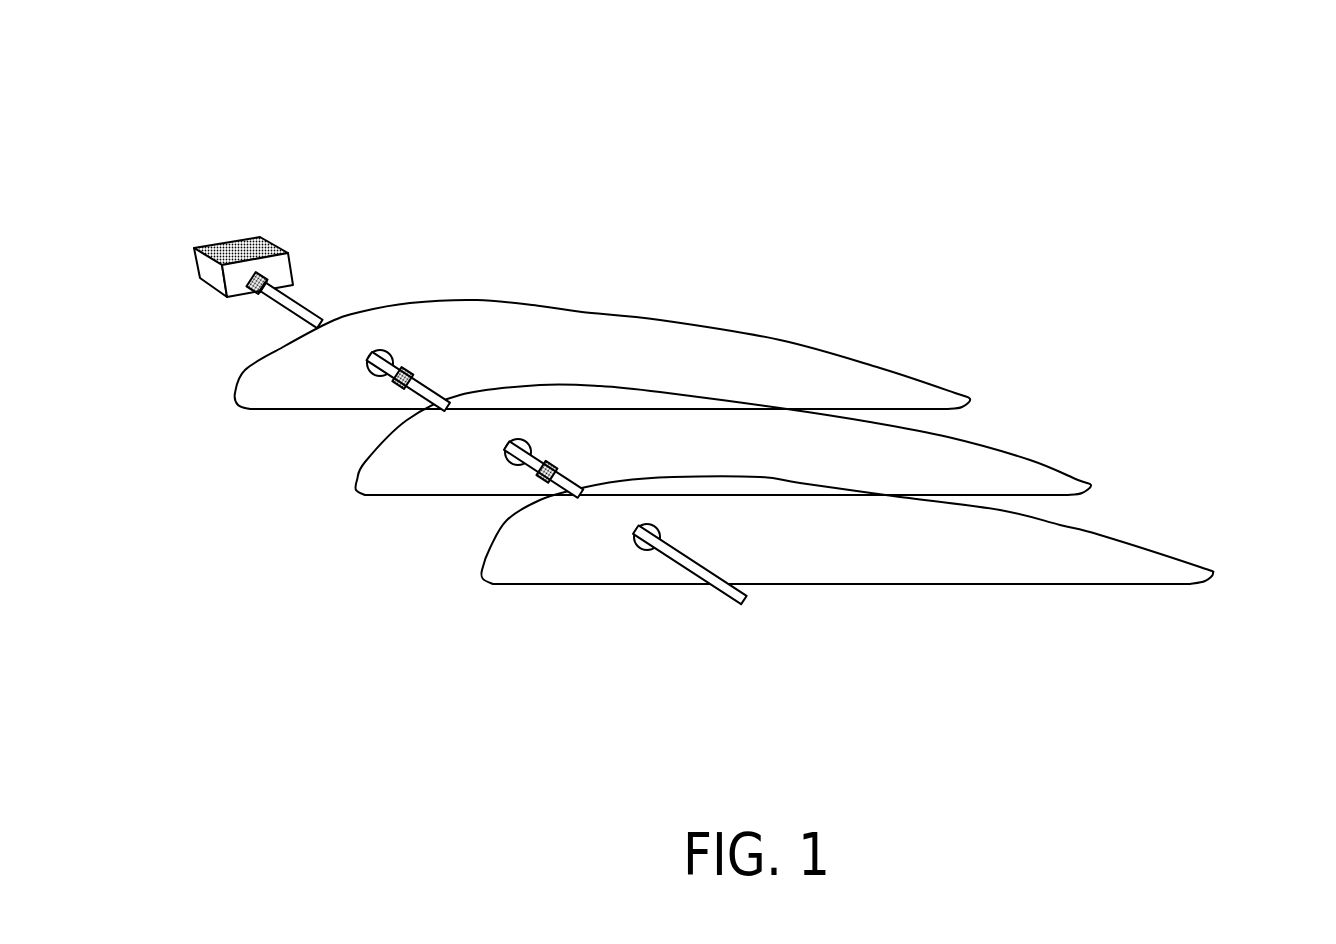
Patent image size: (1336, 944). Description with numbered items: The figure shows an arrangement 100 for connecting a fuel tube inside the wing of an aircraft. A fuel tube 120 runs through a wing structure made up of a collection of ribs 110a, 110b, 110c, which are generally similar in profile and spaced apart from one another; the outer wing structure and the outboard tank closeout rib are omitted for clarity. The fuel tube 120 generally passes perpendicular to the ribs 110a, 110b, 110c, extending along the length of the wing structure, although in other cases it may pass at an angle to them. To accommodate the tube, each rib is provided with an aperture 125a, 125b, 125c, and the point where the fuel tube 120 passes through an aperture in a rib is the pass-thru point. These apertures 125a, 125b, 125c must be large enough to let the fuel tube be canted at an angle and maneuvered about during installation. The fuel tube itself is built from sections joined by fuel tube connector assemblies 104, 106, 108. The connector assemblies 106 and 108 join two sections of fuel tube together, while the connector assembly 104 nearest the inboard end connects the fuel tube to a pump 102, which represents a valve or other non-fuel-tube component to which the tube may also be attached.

The multi-airfoil actuation system 100 is at (230, 132).
The pump 102 is at (245, 243).
The fuel tube connector assembly 104 is at (253, 293).
The fuel tube connector assembly 106 is at (413, 367).
The fuel tube connector assembly 108 is at (556, 462).
The rib 110a is at (582, 312).
The rib 110b is at (948, 437).
The rib 110c is at (1060, 525).
The fuel tube 120 is at (710, 588).
The aperture 125a is at (367, 373).
The aperture 125b is at (503, 460).
The aperture 125c is at (632, 541).